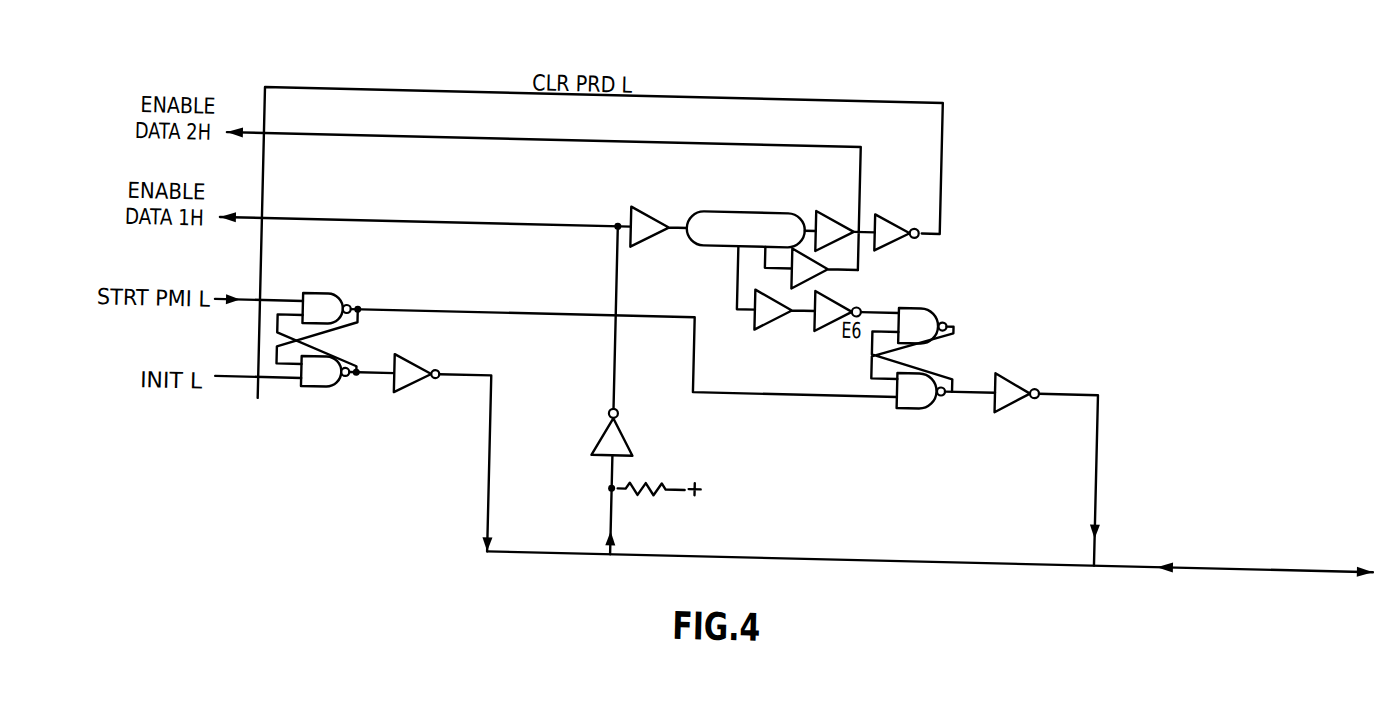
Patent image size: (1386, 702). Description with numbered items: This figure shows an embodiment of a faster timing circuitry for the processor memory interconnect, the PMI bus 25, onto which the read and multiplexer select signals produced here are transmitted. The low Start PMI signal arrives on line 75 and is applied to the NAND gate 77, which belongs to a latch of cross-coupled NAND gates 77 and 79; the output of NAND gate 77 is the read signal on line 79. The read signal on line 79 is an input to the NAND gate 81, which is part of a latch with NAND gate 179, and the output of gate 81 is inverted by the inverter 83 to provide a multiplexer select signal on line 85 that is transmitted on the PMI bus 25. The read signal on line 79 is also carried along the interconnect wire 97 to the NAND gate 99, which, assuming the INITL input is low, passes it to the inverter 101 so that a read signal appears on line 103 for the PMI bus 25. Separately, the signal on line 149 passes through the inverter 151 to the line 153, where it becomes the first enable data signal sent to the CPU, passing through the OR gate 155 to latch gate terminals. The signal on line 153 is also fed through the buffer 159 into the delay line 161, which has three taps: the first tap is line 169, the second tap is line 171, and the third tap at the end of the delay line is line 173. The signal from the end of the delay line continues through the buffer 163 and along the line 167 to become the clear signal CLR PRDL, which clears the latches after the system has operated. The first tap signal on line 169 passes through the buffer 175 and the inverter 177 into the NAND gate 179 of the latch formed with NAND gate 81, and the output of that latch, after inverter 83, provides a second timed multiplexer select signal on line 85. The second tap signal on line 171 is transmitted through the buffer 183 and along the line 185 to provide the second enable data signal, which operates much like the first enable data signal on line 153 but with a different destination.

The PMI bus 25 is at (1046, 547).
The Start PMI line 75 is at (250, 300).
The NAND gate 77 is at (330, 304).
The read signal line 79 is at (571, 307).
The NAND gate 81 is at (909, 383).
The inverter 83 is at (1020, 386).
The multiplexer select signal line 85 is at (1106, 409).
The interconnect wire 97 is at (350, 326).
The NAND gate 99 is at (328, 386).
The inverter 101 is at (419, 373).
The read signal line 103 is at (498, 446).
The line 149 is at (621, 494).
The inverter 151 is at (615, 427).
The enable data line 153 is at (578, 217).
The OR gate 155 is at (898, 215).
The buffer 159 is at (658, 216).
The delay line 161 is at (775, 202).
The buffer 163 is at (840, 204).
The clear signal line 167 is at (909, 87).
The first tap line 169 is at (742, 242).
The second tap line 171 is at (767, 253).
The third tap line 173 is at (814, 215).
The buffer 175 is at (771, 314).
The inverter 177 is at (826, 308).
The NAND gate 179 is at (937, 293).
The buffer 183 is at (824, 257).
The second enable data line 185 is at (769, 133).